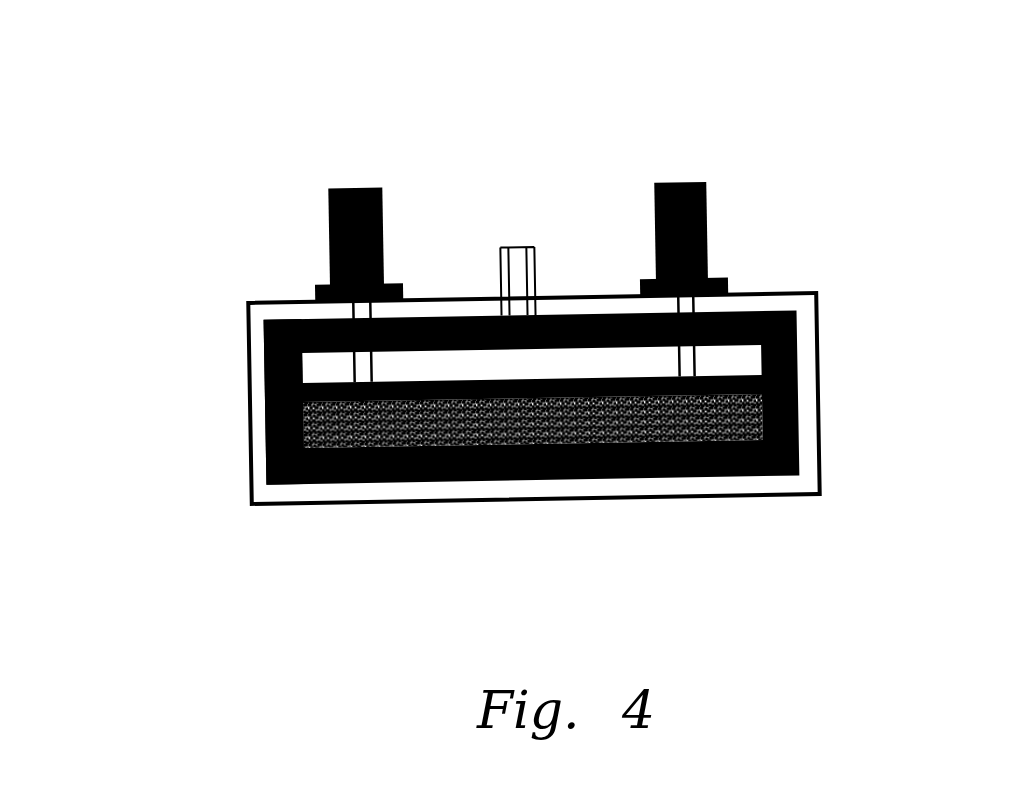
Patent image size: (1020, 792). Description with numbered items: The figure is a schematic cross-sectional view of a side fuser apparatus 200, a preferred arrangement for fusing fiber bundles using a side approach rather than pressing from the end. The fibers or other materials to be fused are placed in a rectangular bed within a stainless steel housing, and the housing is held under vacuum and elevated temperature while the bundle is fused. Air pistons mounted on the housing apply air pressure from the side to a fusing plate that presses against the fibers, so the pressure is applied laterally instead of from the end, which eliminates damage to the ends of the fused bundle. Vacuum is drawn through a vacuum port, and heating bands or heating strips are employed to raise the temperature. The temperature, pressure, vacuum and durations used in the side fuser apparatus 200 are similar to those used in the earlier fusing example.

The side fuser apparatus 200 is at (474, 312).